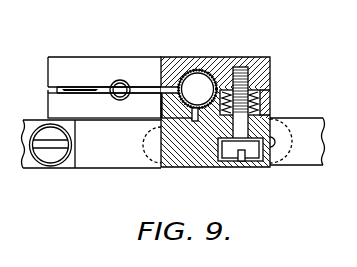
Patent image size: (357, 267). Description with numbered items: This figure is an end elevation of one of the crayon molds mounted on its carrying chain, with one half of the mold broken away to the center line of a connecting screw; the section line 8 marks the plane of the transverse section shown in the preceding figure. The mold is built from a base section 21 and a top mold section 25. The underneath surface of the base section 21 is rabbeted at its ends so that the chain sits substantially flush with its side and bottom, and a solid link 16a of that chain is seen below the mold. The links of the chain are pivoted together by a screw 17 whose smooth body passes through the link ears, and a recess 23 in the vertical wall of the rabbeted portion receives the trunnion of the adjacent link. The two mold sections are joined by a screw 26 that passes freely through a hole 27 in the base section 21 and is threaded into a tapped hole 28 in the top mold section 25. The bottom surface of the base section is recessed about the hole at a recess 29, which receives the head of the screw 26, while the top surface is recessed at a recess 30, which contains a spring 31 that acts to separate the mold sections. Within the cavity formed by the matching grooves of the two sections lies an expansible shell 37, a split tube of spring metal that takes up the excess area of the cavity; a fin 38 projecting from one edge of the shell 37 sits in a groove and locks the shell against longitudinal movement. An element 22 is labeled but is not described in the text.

The section line 8— 8 is at (120, 195).
The solid link 16a is at (92, 144).
The screw 17 is at (50, 157).
The base section 21 is at (58, 106).
The member 22 is at (24, 96).
The recess 23 is at (149, 168).
The top mold section 25 is at (147, 57).
The screw 26 is at (245, 66).
The hole 27 is at (250, 133).
The tapped hole 28 is at (238, 66).
The recess 29 is at (252, 162).
The recess 30 is at (272, 98).
The spring 31 is at (90, 79).
The expansible shell 37 is at (205, 78).
The fin 38 is at (165, 112).